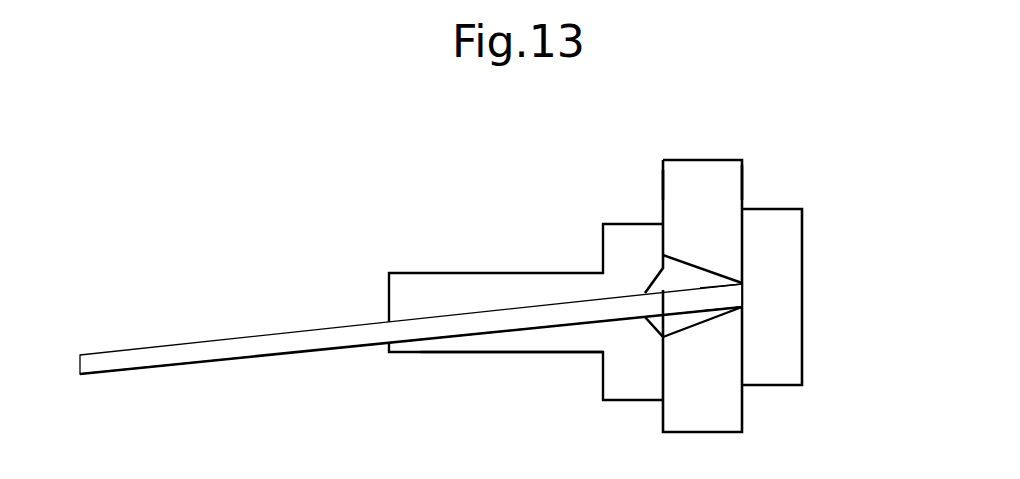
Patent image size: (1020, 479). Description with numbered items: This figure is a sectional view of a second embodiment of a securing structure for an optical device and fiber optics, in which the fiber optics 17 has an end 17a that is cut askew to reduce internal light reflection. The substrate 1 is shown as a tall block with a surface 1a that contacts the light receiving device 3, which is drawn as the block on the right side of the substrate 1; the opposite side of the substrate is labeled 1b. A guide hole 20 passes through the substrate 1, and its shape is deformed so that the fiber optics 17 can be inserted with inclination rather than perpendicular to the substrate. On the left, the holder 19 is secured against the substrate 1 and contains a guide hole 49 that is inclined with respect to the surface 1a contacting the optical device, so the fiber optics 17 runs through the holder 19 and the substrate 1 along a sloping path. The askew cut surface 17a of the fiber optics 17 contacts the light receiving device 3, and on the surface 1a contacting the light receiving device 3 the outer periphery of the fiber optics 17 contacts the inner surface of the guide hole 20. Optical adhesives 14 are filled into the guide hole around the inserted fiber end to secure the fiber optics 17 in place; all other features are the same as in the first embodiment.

The substrate 1 is at (704, 175).
The surface of substrate 1a is at (742, 173).
The front surface of head block 1b is at (663, 180).
The light receiving device 3 is at (795, 225).
The optical adhesives 14 is at (685, 320).
The fiber optics 17 is at (298, 337).
The end of fiber optics 17a is at (743, 293).
The holder 19 is at (563, 342).
The guide hole 20 is at (685, 278).
The guide hole 49 is at (452, 315).